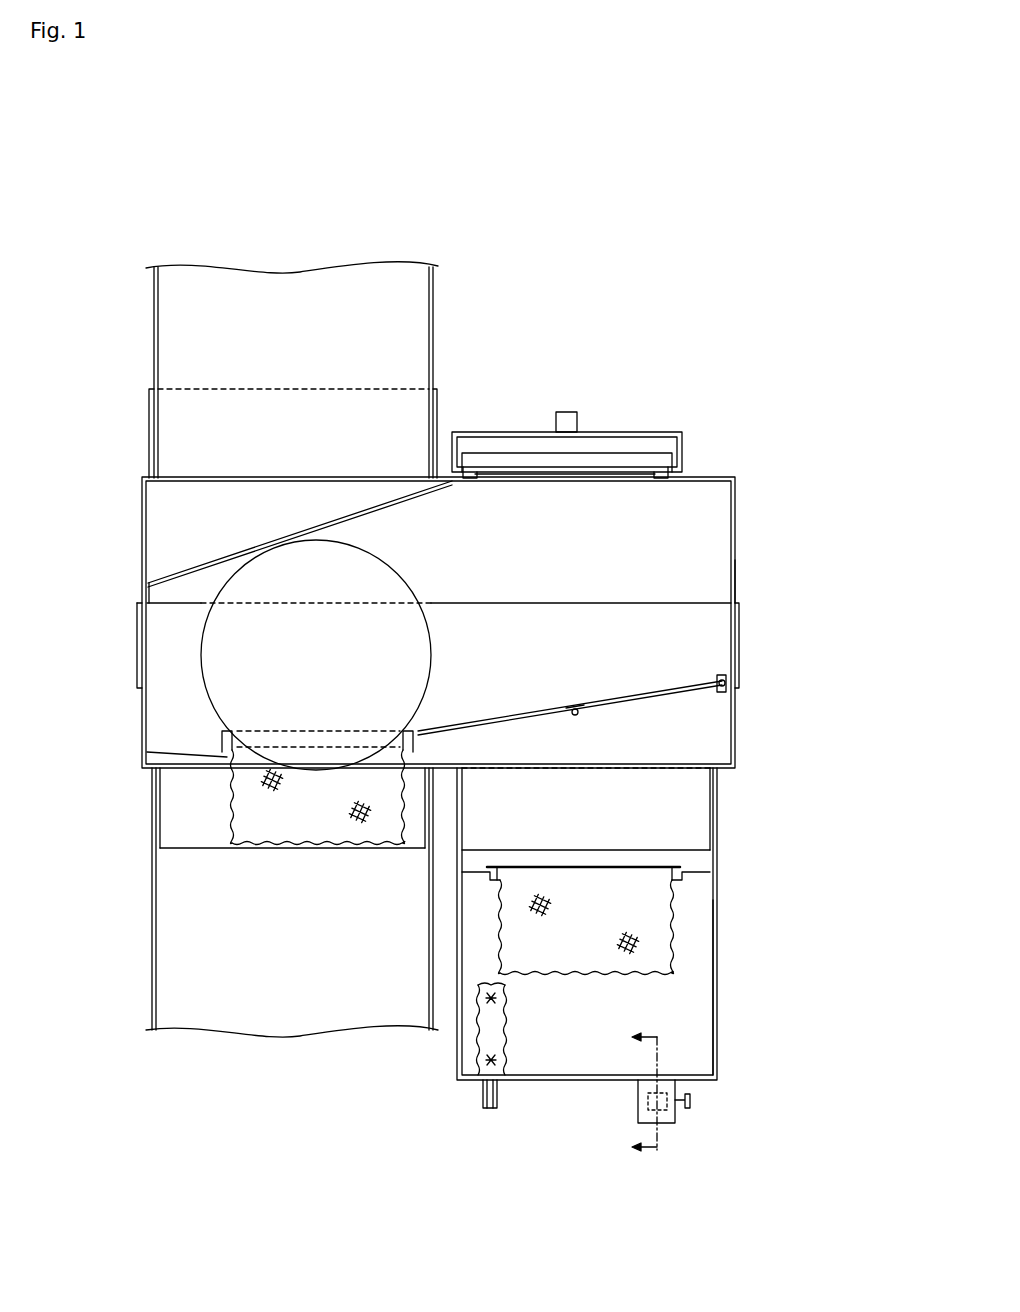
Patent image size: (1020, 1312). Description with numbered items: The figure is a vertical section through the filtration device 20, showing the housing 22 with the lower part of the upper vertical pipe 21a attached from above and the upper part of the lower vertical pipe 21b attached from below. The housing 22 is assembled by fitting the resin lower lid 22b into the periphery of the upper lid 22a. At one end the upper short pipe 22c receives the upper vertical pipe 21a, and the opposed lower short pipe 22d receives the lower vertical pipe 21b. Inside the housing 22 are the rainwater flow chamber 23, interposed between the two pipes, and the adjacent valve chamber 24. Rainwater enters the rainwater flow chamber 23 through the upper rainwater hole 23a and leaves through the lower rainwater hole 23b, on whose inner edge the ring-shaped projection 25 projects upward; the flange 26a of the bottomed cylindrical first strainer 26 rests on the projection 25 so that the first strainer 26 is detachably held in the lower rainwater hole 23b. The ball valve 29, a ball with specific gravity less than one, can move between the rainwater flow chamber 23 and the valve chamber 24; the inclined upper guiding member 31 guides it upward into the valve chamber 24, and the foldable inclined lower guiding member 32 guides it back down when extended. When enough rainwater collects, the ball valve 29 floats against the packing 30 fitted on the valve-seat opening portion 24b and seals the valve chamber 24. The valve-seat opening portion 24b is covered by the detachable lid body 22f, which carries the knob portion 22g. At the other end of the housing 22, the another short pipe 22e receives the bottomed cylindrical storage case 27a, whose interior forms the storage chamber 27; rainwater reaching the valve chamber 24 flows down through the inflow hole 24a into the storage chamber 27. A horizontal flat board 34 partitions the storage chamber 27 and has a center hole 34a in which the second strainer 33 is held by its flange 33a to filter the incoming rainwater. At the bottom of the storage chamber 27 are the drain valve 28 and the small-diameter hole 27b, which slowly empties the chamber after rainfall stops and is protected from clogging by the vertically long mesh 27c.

The filtration device 20 is at (164, 241).
The upper vertical pipe 21a is at (433, 290).
The lower vertical pipe 21b is at (156, 978).
The housing 22 is at (793, 585).
The upper lid 22a is at (734, 560).
The lower lid 22b is at (737, 690).
The upper short pipe 22c is at (149, 403).
The lower short pipe 22d is at (162, 835).
The another short pipe 22e is at (712, 806).
The lid body 22f is at (480, 430).
The knob portion 22g is at (565, 412).
The rainwater flow chamber 23 is at (362, 538).
The upper rainwater hole 23a is at (175, 488).
The lower rainwater hole 23b is at (230, 770).
The valve chamber 24 is at (591, 648).
The inflow hole 24a is at (700, 766).
The valve-seat opening portion 24b is at (658, 474).
The ring-shaped projection 25 is at (205, 755).
The first strainer 26 is at (282, 847).
The flange 26a is at (225, 732).
The storage chamber 27 is at (612, 1012).
The storage case 27a is at (716, 1035).
The small-diameter hole 27b is at (490, 1110).
The mesh 27c is at (507, 1040).
The drain valve 28 is at (638, 1100).
The ball valve 29 is at (433, 646).
The packing 30 is at (572, 476).
The upper guiding member 31 is at (278, 530).
The lower guiding member 32 is at (658, 697).
The second strainer 33 is at (672, 928).
The flange 33a is at (680, 866).
The flat board 34 is at (700, 878).
The center hole 34a is at (670, 875).